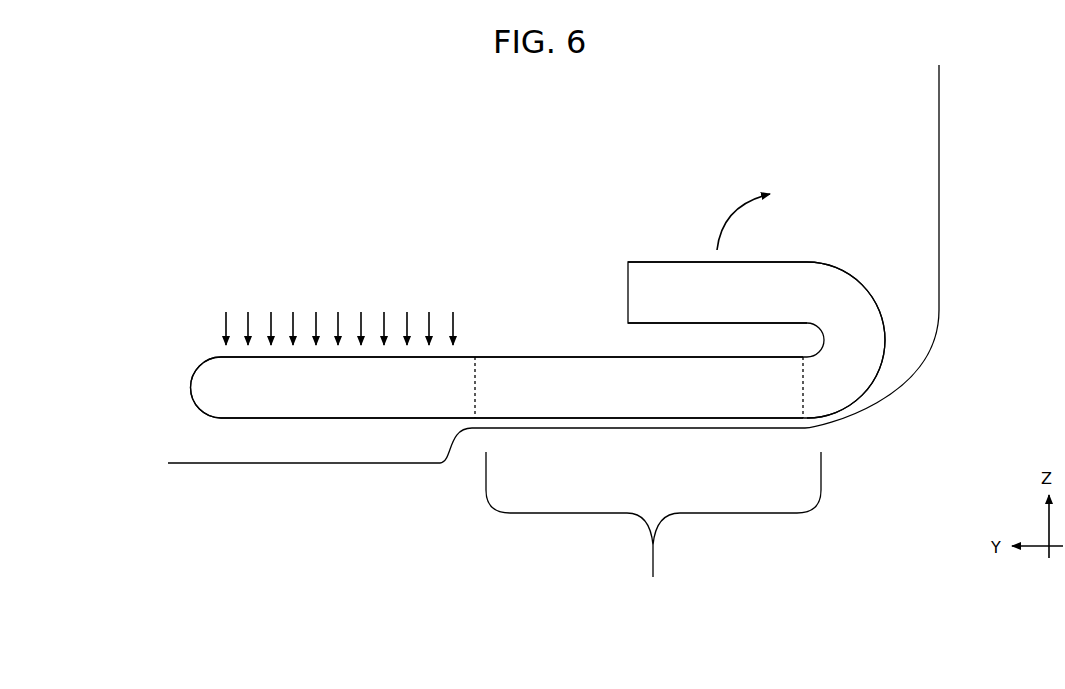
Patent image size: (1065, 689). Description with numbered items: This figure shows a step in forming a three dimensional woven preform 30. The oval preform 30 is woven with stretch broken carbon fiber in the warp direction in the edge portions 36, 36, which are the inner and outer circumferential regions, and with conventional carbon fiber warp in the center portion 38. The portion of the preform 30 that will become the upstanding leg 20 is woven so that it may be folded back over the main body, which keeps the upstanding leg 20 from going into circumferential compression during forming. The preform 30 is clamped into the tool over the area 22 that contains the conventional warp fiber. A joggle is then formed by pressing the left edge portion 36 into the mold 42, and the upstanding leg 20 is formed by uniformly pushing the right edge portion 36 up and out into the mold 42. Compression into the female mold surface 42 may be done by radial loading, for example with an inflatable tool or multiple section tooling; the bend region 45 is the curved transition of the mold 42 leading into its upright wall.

The upstanding leg 20 is at (757, 201).
The area containing the conventional warp fiber 22 is at (653, 527).
The woven preform 30 is at (215, 388).
The edge portions 36 is at (537, 340).
The center portion 38 is at (639, 387).
The mold 42 is at (934, 122).
The bend of second panel 45 is at (893, 393).